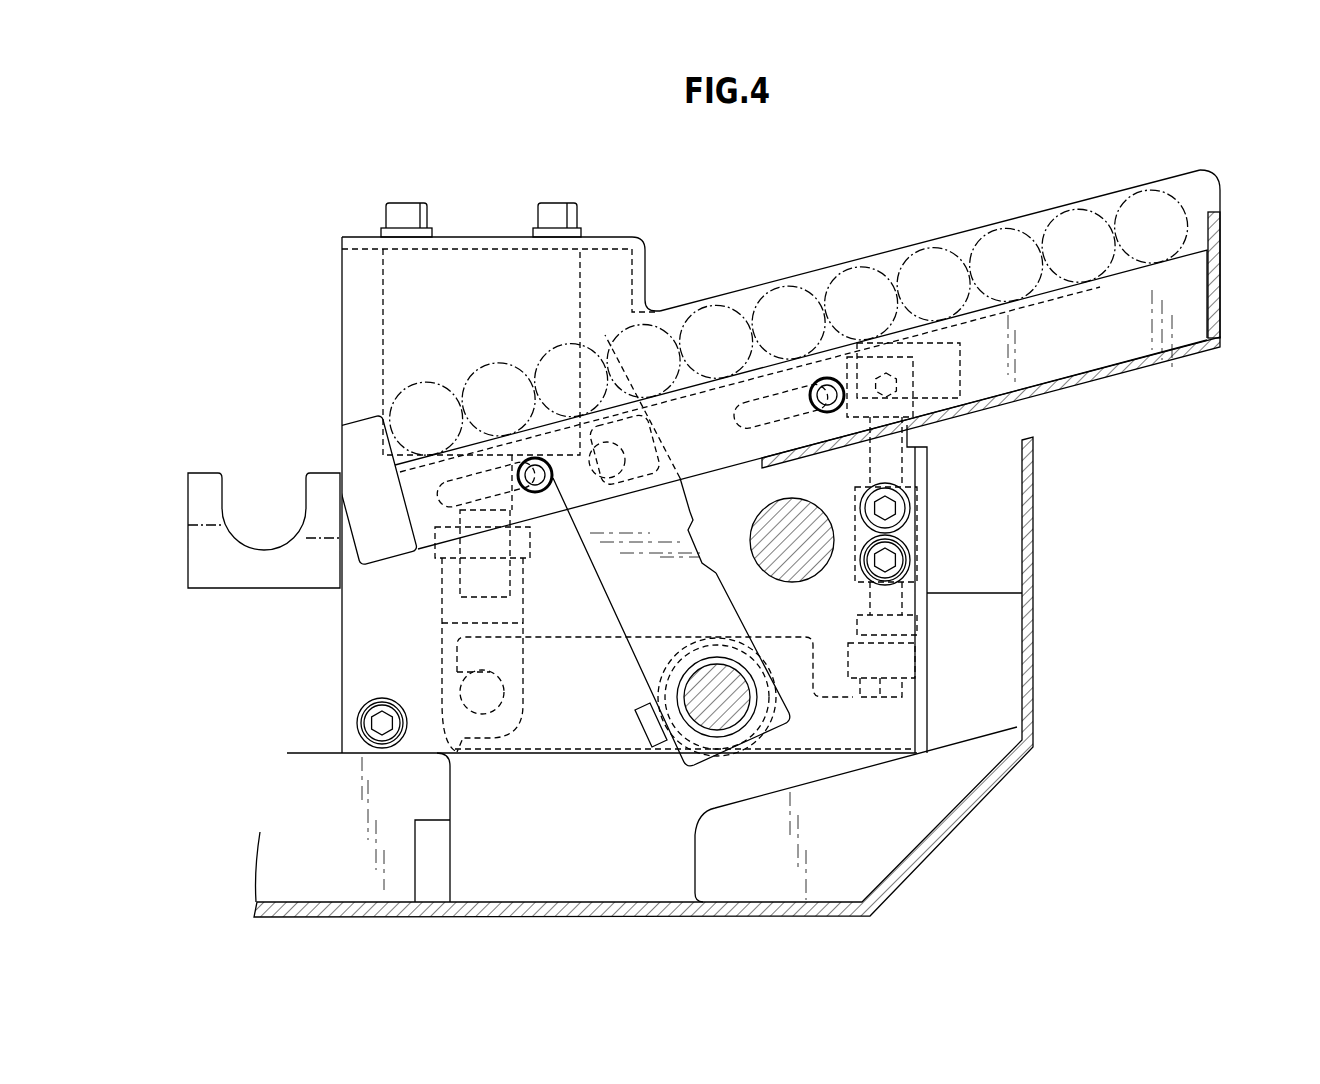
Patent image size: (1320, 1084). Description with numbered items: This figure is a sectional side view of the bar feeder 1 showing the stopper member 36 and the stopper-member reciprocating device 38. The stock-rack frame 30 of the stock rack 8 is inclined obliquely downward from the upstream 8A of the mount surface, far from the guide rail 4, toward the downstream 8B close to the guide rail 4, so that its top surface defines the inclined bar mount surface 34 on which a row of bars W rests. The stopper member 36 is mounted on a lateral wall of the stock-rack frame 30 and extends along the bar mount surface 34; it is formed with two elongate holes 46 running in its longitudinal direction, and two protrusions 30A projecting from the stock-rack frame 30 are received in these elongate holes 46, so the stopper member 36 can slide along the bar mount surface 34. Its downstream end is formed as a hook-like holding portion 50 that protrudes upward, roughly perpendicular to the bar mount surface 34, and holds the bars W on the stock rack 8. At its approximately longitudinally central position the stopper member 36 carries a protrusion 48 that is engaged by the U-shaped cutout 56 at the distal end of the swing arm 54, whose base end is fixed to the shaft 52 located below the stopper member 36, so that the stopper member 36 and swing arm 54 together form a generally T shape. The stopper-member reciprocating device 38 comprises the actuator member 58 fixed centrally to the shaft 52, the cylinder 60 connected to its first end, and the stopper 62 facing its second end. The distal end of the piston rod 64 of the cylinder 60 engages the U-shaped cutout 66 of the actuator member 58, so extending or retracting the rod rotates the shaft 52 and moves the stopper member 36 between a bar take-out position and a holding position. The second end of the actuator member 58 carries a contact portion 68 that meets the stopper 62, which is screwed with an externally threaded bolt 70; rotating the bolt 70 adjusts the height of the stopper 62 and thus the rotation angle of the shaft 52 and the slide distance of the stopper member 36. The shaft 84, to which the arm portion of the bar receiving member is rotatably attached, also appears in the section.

The bar feeder 1 is at (877, 228).
The stock rack 8 is at (1224, 276).
The upstream of the mount surface 8A is at (1164, 167).
The downstream of the mount surface 8B is at (362, 413).
The bars W is at (1100, 213).
The bar mount surface 34 is at (985, 250).
The stock-rack frame 30 is at (1125, 335).
The protrusions 30A is at (535, 458).
The protrusion 48 is at (607, 440).
The elongate holes 46 is at (530, 540).
The hook-like holding portion 50 is at (360, 460).
The stopper member 36 is at (385, 545).
The cylinder 60 is at (467, 285).
The guide rail 4 is at (205, 497).
The swing arm 54 is at (605, 568).
The U-shaped cutout 56 is at (672, 486).
The shaft 52 is at (722, 705).
The shaft 84 is at (796, 560).
The actuator member 58 is at (528, 753).
The piston rod 64 is at (450, 648).
The U-shaped cutout 66 is at (490, 707).
The bolt 70 is at (895, 460).
The stopper 62 is at (912, 622).
The contact portion 68 is at (912, 668).
The stopper-member reciprocating device 38 is at (568, 736).